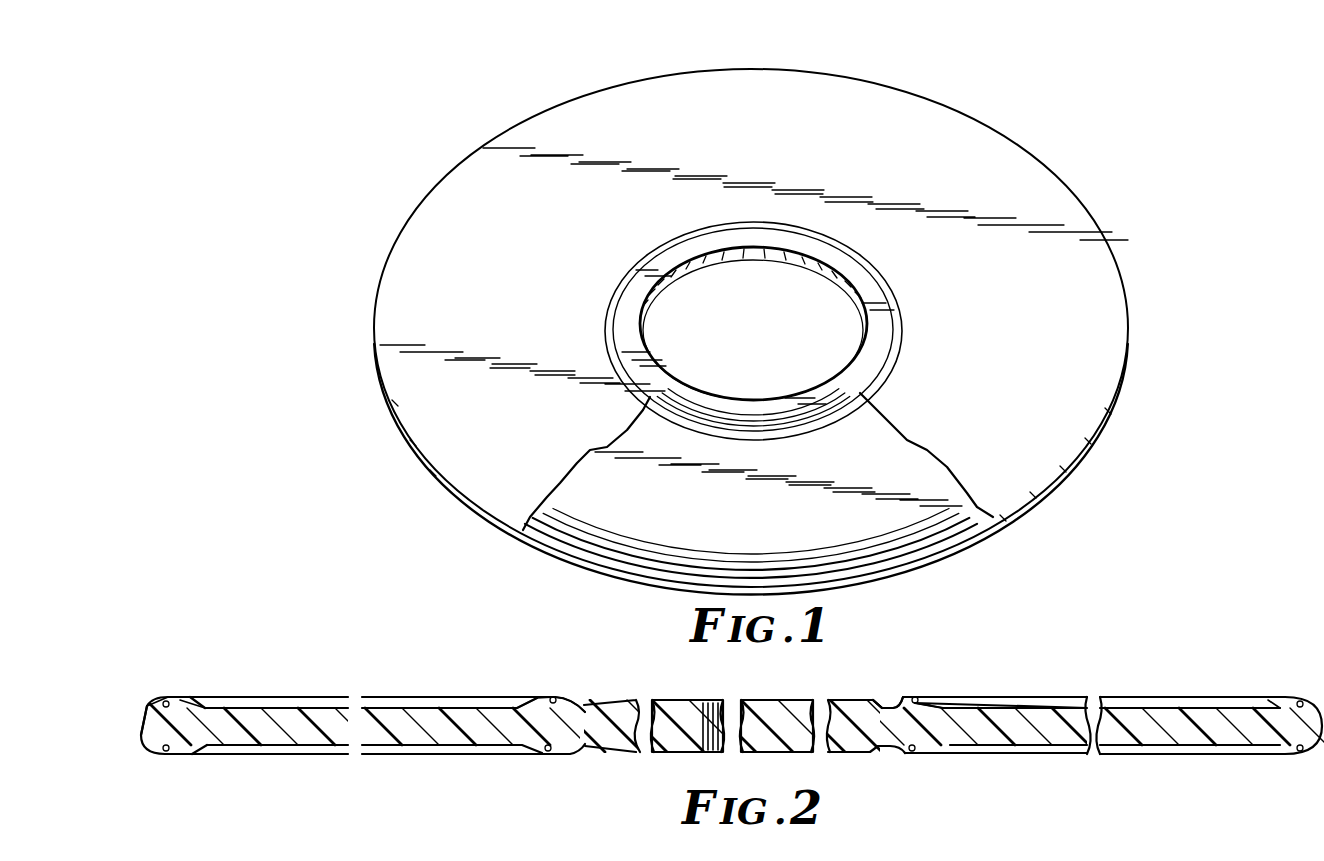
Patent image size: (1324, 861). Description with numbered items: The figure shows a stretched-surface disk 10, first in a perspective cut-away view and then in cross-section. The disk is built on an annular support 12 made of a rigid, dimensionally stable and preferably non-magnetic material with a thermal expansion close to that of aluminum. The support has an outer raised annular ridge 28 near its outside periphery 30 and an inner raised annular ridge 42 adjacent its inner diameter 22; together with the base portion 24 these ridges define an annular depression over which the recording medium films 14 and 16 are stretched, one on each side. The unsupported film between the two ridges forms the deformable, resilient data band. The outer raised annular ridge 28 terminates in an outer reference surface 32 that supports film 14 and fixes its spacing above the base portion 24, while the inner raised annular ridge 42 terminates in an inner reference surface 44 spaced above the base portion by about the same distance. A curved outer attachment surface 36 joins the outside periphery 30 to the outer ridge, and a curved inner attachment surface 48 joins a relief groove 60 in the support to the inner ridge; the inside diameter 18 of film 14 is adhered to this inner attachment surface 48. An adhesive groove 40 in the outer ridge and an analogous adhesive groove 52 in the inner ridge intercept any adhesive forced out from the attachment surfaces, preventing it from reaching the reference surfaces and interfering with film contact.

In FIG. 1, the stretched-surface disk 10 is at (1097, 203).
In FIG. 2, the stretched-surface disk 10 is at (1148, 685).
In FIG. 1, the annular support 12 is at (1076, 463).
In FIG. 2, the annular support 12 is at (627, 750).
In FIG. 1, the recording medium film 14 is at (1103, 271).
In FIG. 2, the recording medium film 14 is at (1077, 698).
In FIG. 2, the recording medium film 16 is at (1062, 755).
In FIG. 1, the inside diameter of the recording medium film 18 is at (787, 227).
In FIG. 2, the inside diameter of the recording medium film 18 is at (887, 707).
In FIG. 2, the inner diameter of the support 22 is at (757, 717).
In FIG. 1, the base portion 24 is at (607, 512).
In FIG. 2, the base portion 24 is at (338, 707).
In FIG. 1, the outer raised annular ridge 28 is at (898, 553).
In FIG. 2, the outer raised annular ridge 28 is at (207, 703).
In FIG. 2, the outside periphery 30 is at (135, 732).
In FIG. 2, the outer reference surface 32 is at (178, 702).
In FIG. 2, the outer attachment surface 36 is at (148, 707).
In FIG. 2, the adhesive groove 40 is at (167, 703).
In FIG. 1, the inner raised annular ridge 42 is at (795, 420).
In FIG. 2, the inner raised annular ridge 42 is at (510, 698).
In FIG. 2, the inner reference surface 44 is at (532, 698).
In FIG. 2, the inner attachment surface 48 is at (572, 702).
In FIG. 2, the adhesive groove 52 is at (555, 698).
In FIG. 2, the relief groove 60 is at (878, 706).